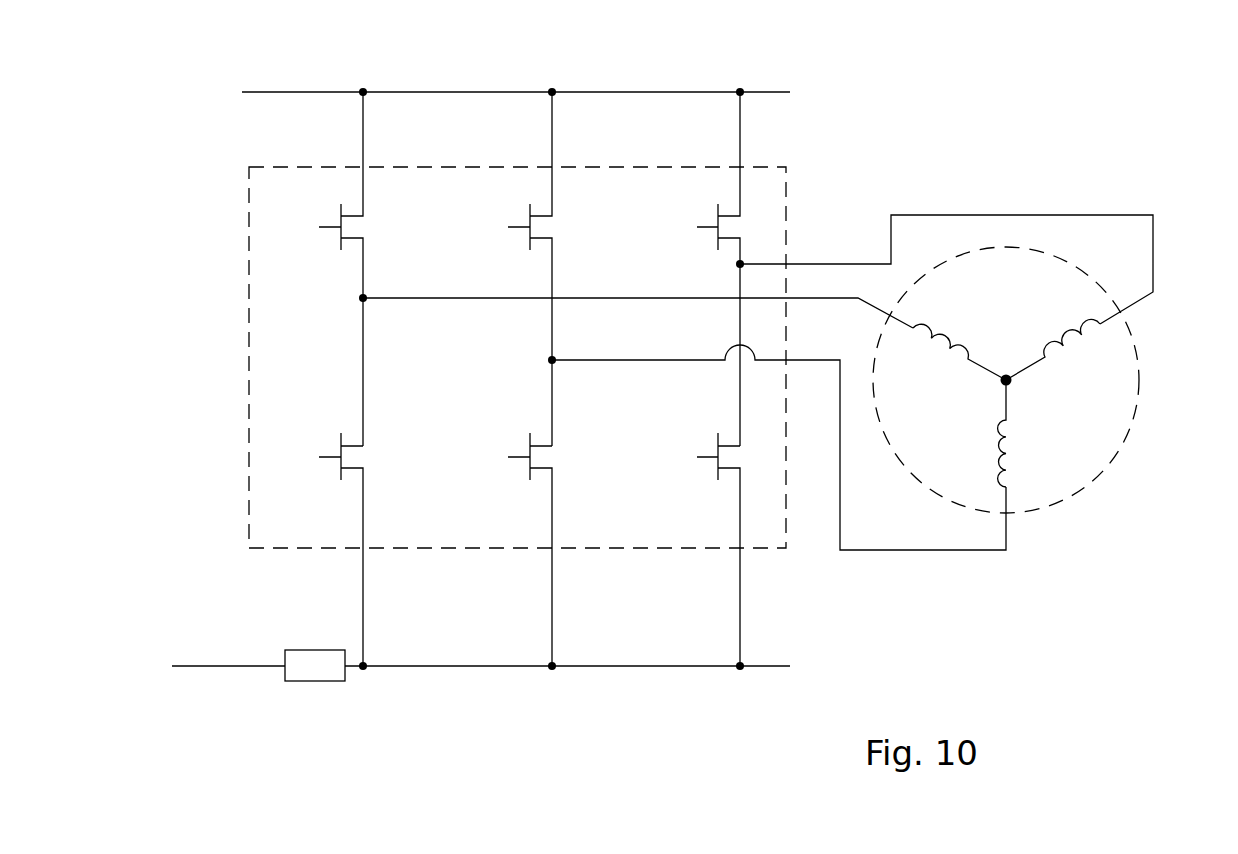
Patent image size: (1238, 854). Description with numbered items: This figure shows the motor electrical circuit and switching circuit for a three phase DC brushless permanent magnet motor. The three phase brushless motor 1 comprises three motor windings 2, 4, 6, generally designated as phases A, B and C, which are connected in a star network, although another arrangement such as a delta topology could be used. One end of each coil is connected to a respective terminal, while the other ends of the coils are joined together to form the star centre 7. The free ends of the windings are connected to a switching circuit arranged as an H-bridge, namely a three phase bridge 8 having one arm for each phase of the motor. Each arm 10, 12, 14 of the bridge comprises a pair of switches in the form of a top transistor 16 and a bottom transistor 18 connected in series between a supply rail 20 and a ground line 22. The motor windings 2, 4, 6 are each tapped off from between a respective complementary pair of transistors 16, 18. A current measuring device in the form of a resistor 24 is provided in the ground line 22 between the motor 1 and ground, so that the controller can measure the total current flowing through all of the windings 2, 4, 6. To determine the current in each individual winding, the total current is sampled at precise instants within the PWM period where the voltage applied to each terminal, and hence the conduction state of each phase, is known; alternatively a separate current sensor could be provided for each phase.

The three phase brushless motor 1 is at (1133, 340).
The motor winding 2 is at (995, 447).
The motor winding 4 is at (953, 337).
The motor winding 6 is at (1060, 348).
The star centre 7 is at (1006, 374).
The three phase bridge 8 is at (249, 268).
The arm of the bridge 10 is at (363, 149).
The arm of the bridge 12 is at (552, 142).
The arm of the bridge 14 is at (740, 142).
The top transistor 16 is at (363, 271).
The bottom transistor 18 is at (363, 508).
The supply rail 20 is at (290, 92).
The ground line 22 is at (250, 666).
The resistor 24 is at (320, 681).